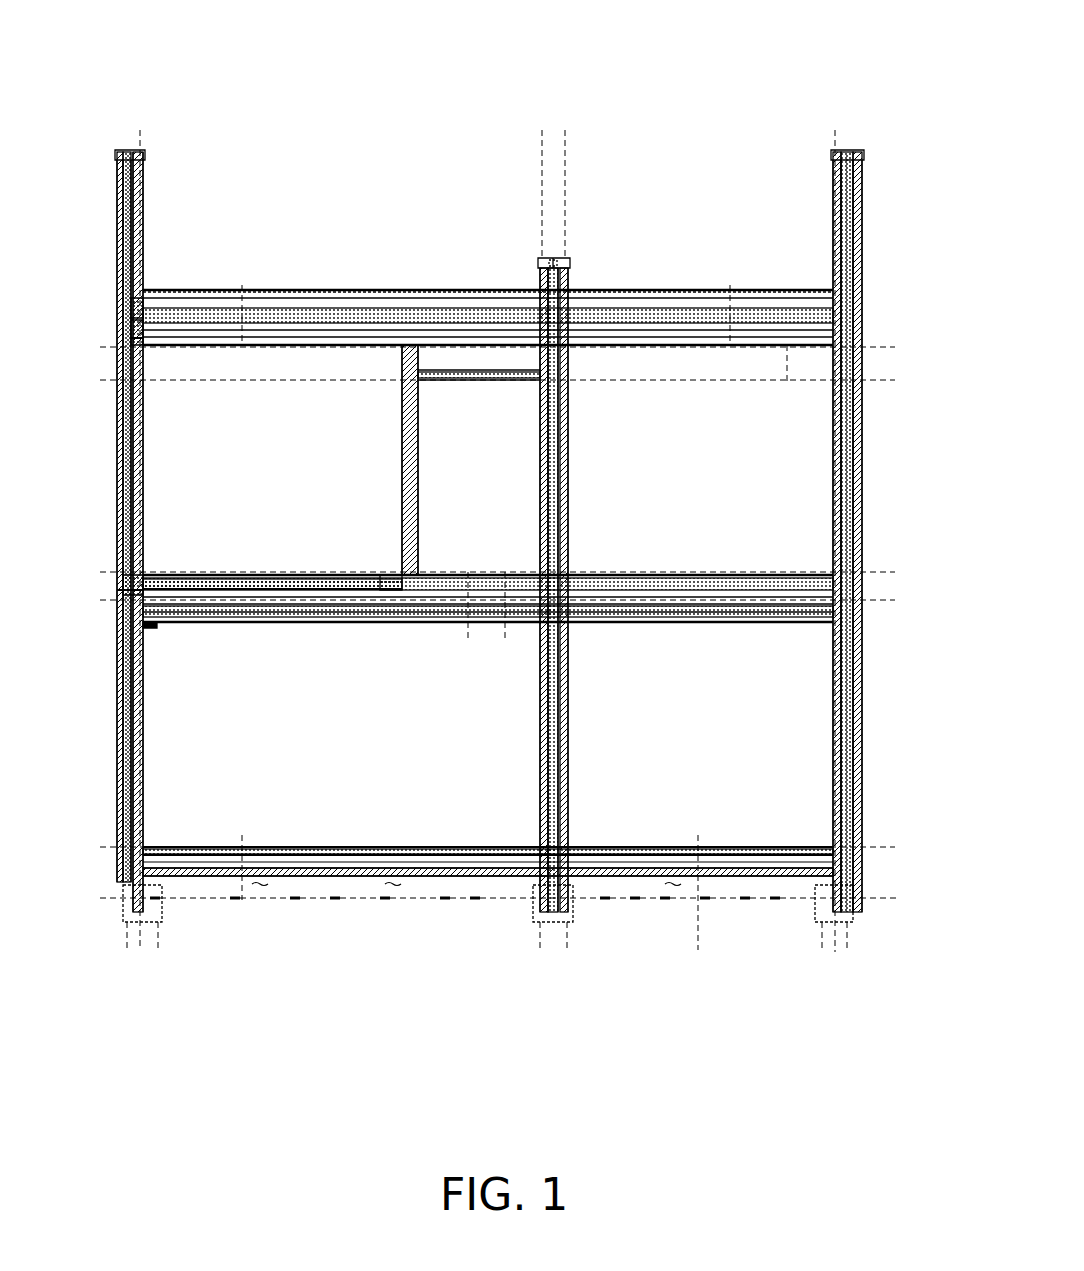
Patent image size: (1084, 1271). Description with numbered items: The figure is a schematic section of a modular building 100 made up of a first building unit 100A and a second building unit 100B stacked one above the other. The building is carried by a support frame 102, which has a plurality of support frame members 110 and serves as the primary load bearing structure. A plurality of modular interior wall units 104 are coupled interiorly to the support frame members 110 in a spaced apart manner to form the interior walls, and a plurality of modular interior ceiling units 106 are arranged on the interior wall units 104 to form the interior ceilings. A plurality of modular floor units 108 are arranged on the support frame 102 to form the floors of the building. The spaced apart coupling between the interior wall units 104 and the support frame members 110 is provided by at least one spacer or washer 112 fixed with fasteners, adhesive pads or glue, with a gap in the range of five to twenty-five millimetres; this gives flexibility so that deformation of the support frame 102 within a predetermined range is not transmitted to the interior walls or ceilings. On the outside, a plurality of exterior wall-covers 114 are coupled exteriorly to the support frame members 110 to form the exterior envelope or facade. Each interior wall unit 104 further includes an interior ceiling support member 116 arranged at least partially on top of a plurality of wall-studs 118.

The modular building 100 is at (838, 80).
The first building unit 100A is at (848, 843).
The second building unit 100B is at (843, 625).
The support frame 102 is at (96, 531).
The modular interior wall unit 104 is at (140, 530).
The modular interior ceiling unit 106 is at (325, 348).
The modular floor unit 108 is at (290, 582).
The support frame member 110 is at (130, 488).
The spacer or washer 112 is at (138, 373).
The exterior wall-cover 114 is at (127, 588).
The interior ceiling support member 116 is at (133, 343).
The wall-stud 118 is at (148, 625).